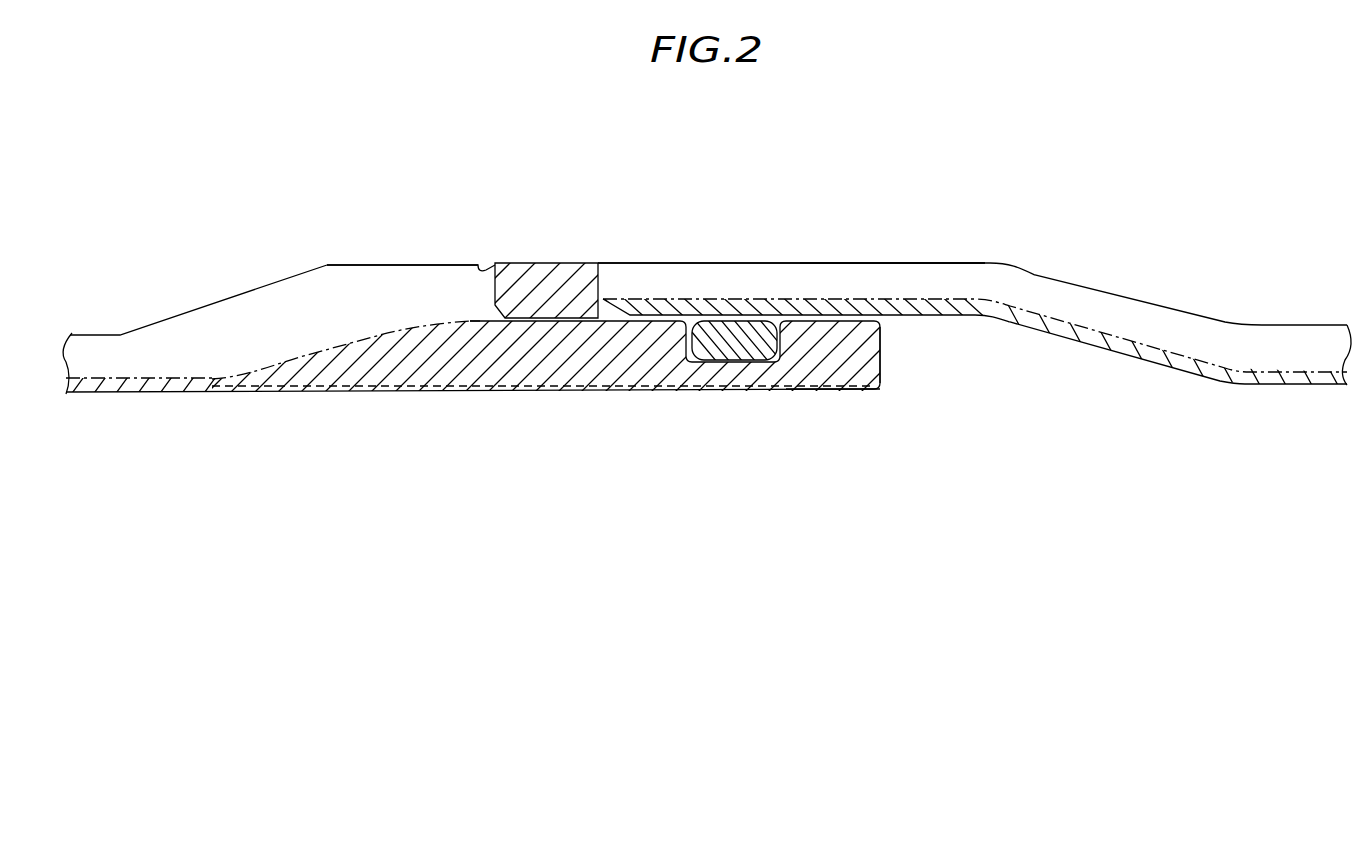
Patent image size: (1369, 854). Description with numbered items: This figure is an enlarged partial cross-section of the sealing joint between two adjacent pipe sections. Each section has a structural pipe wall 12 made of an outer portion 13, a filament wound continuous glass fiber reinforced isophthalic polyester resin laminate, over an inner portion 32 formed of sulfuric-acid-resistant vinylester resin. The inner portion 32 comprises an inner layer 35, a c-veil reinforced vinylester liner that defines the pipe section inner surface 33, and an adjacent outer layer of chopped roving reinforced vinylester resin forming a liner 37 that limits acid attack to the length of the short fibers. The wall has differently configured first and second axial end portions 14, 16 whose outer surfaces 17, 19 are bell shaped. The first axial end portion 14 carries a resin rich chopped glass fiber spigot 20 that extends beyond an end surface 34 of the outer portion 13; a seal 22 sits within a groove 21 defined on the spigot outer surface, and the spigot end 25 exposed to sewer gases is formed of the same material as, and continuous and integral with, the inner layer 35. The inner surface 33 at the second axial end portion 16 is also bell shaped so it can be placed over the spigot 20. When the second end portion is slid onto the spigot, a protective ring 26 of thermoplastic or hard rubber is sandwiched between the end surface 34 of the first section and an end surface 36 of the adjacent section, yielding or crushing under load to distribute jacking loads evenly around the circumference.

The structural pipe wall 12 is at (212, 346).
The outer portion 13 is at (283, 315).
The first axial end portion 14 is at (393, 338).
The second axial end portion 16 is at (882, 279).
The outer surface of first end portion 17 is at (410, 262).
The outer surface of second end portion 19 is at (783, 263).
The spigot 20 is at (832, 357).
The groove 21 is at (688, 360).
The seal 22 is at (735, 342).
The spigot end 25 is at (880, 346).
The protective ring 26 is at (546, 282).
The inner portion 32 is at (112, 391).
The inner surface 33 is at (1003, 322).
The end surface 34 is at (471, 265).
The inner layer 35 is at (392, 390).
The end surface of second pipe section 36 is at (600, 280).
The liner 37 is at (493, 355).